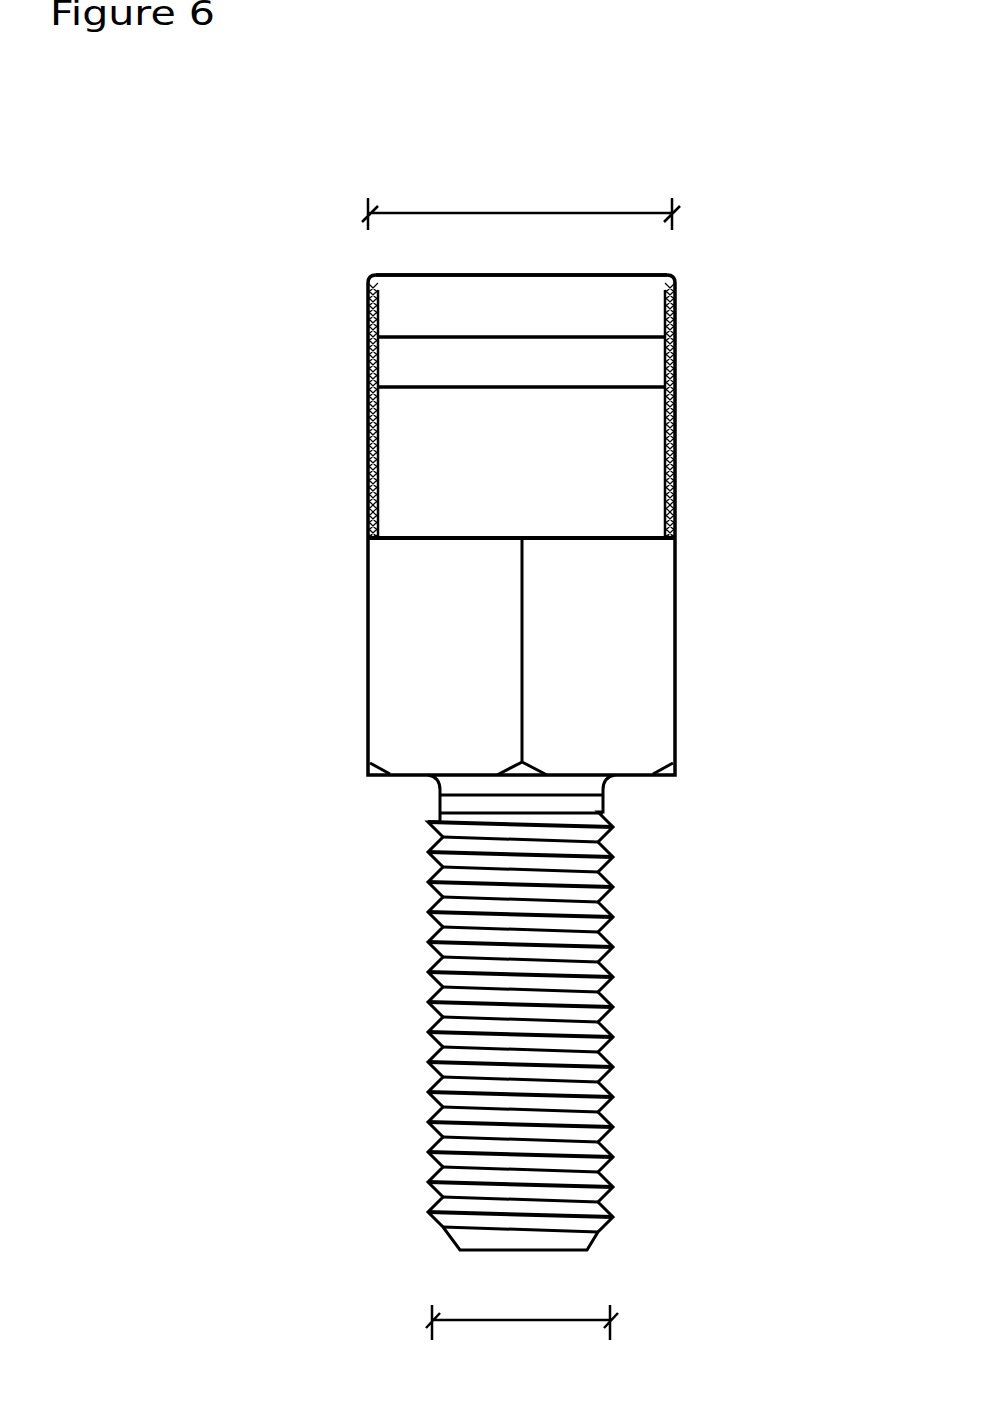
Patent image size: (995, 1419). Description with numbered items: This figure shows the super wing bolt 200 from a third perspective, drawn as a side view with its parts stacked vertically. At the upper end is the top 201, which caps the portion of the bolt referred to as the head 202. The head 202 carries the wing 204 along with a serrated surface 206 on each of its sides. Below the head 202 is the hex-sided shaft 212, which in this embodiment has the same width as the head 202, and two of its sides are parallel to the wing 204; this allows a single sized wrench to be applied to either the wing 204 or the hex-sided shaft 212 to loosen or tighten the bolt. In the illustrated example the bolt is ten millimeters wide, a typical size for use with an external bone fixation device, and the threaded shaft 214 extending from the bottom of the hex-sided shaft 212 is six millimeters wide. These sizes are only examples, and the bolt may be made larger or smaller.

The super wing bolt 200 is at (472, 150).
The top 201 is at (409, 271).
The head 202 is at (208, 525).
The wing 204 is at (613, 308).
The serrated surface 206 is at (370, 492).
The hex-sided shaft 212 is at (368, 722).
The threaded shaft 214 is at (436, 991).